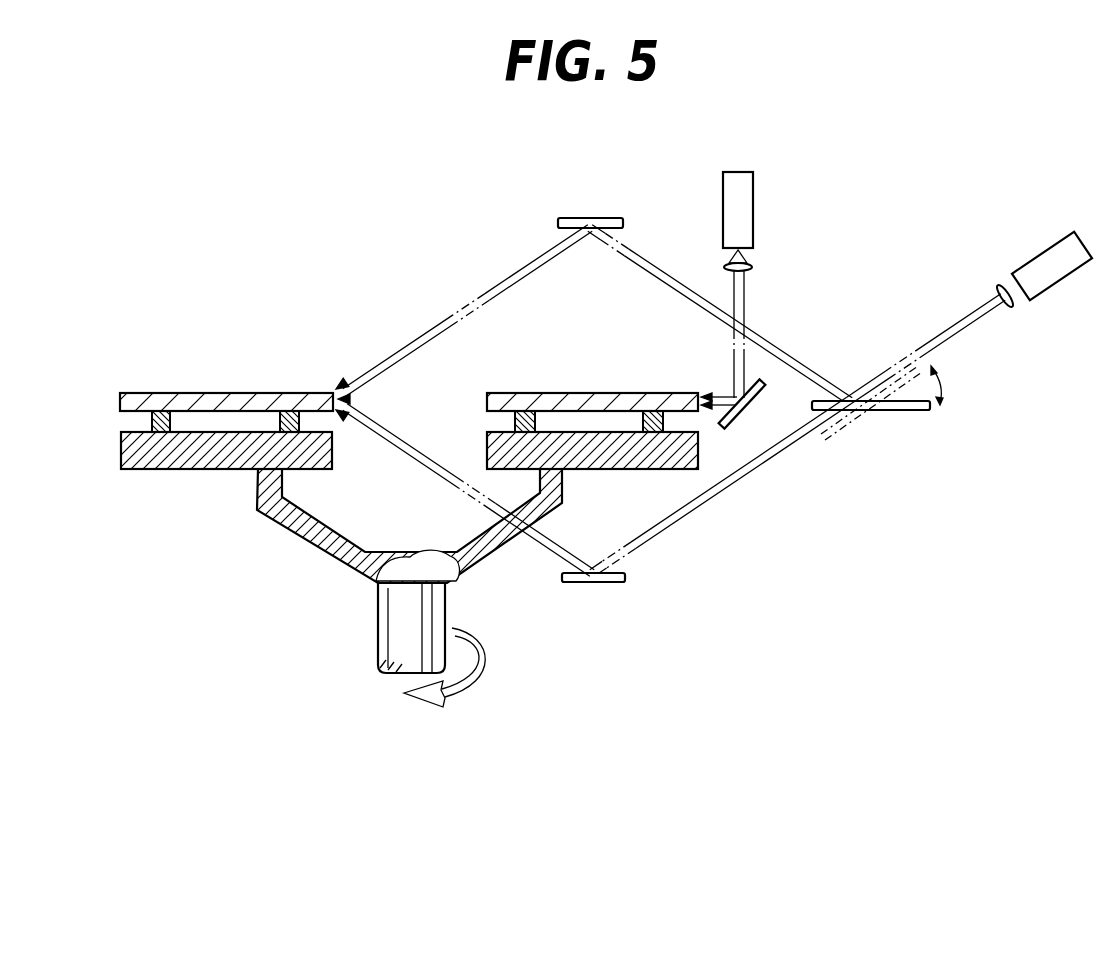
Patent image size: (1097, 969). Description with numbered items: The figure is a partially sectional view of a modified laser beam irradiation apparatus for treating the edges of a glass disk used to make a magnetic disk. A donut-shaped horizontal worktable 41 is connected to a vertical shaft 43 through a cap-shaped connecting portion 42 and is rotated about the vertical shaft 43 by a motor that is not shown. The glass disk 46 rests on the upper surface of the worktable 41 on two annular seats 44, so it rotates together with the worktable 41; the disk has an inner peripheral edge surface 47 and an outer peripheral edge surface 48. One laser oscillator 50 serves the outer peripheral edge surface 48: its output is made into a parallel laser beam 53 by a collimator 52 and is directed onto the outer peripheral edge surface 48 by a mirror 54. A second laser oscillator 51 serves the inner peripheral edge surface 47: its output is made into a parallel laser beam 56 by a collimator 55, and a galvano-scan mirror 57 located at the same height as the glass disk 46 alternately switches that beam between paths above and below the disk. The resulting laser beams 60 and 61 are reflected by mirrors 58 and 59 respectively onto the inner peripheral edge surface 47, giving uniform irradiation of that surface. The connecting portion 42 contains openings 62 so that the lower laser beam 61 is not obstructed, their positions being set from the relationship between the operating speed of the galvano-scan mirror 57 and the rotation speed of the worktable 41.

The horizontal worktable 41 is at (155, 470).
The connecting portion 42 is at (259, 507).
The vertical shaft 43 is at (390, 634).
The annular seats 44 is at (297, 397).
The glass disk 46 is at (198, 397).
The inner peripheral edge surface 47 is at (486, 398).
The outer peripheral edge surface 48 is at (705, 395).
The laser oscillator 50 is at (742, 217).
The laser oscillator 51 is at (1058, 248).
The collimator 52 is at (755, 268).
The parallel laser beam 53 is at (745, 305).
The mirror 54 is at (739, 430).
The collimator 55 is at (1003, 290).
The parallel laser beam 56 is at (955, 325).
The galvano-scan mirror 57 is at (905, 411).
The mirror 58 is at (592, 217).
The mirror 59 is at (612, 583).
The laser beam 60 is at (656, 265).
The laser beam 61 is at (700, 515).
The openings 62 is at (508, 530).